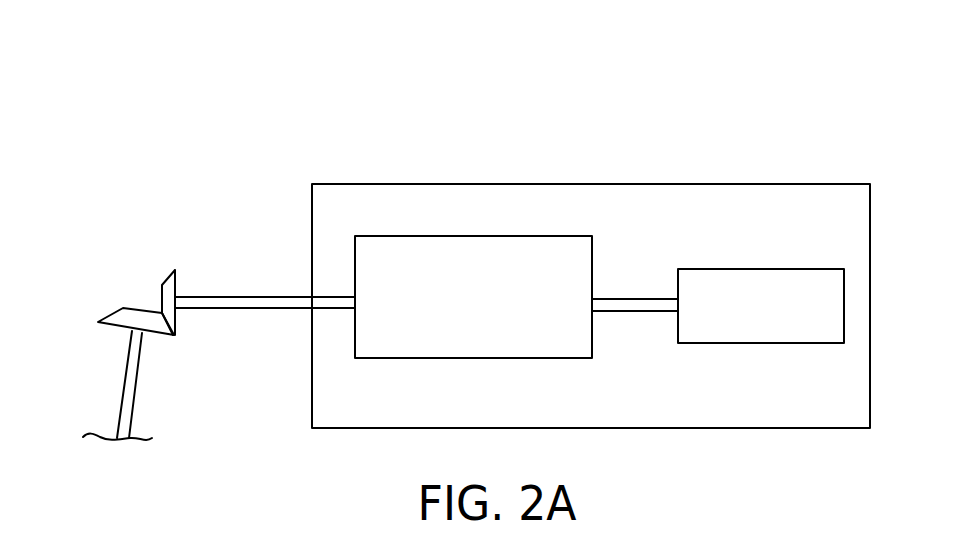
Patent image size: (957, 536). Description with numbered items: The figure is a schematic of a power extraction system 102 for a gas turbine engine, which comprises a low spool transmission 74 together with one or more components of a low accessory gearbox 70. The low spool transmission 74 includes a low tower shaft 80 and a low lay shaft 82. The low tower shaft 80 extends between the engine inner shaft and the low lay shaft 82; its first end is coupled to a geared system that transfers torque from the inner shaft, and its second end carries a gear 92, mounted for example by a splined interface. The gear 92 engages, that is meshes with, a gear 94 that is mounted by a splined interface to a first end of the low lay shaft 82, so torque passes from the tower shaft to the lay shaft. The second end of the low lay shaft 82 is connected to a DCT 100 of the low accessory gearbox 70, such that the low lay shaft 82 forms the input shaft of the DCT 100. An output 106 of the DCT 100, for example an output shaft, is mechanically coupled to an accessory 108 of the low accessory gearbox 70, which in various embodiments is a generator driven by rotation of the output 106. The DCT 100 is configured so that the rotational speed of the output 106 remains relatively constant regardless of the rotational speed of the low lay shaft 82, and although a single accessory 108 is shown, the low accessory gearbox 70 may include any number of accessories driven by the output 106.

The power extraction system 102 is at (137, 108).
The low accessory gearbox 70 is at (615, 203).
The DCT 100 is at (450, 310).
The accessory 108 is at (787, 318).
The output 106 is at (638, 308).
The low lay shaft 82 is at (218, 305).
The gear 94 is at (167, 285).
The gear 92 is at (135, 318).
The low tower shaft 80 is at (130, 373).
The low spool transmission 74 is at (190, 372).